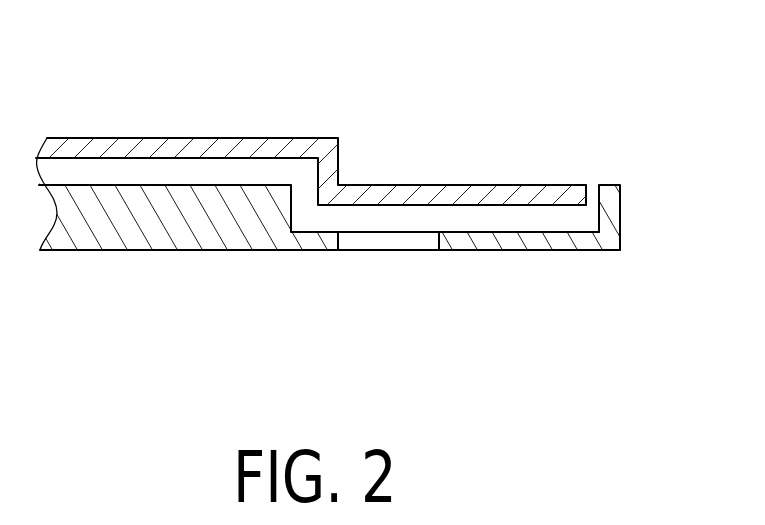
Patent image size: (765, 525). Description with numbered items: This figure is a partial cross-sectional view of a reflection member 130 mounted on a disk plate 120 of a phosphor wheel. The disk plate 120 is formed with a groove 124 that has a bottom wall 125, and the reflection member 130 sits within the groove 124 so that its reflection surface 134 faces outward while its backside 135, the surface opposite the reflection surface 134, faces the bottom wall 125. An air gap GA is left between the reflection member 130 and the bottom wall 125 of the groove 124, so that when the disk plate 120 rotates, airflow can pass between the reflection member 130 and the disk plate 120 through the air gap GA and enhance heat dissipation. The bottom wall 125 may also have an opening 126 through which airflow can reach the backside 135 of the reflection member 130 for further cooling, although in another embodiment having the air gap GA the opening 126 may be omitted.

The disk plate 120 is at (195, 233).
The groove 124 is at (293, 198).
The bottom wall 125 is at (525, 233).
The opening 126 is at (389, 247).
The reflection member 130 is at (530, 192).
The reflection surface 134 is at (562, 183).
The backside 135 is at (572, 206).
The air gap GA is at (448, 223).